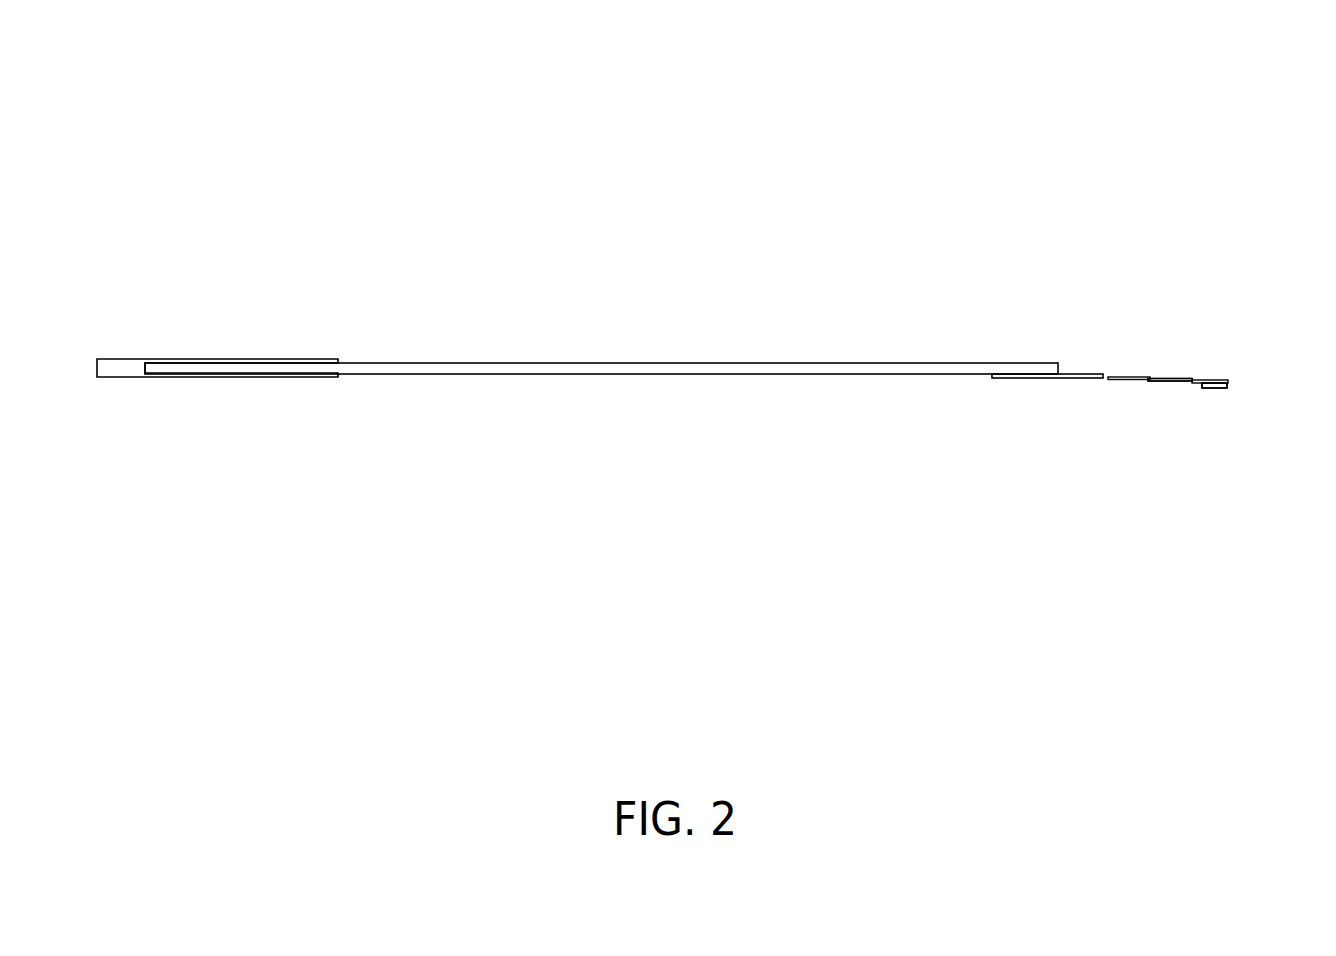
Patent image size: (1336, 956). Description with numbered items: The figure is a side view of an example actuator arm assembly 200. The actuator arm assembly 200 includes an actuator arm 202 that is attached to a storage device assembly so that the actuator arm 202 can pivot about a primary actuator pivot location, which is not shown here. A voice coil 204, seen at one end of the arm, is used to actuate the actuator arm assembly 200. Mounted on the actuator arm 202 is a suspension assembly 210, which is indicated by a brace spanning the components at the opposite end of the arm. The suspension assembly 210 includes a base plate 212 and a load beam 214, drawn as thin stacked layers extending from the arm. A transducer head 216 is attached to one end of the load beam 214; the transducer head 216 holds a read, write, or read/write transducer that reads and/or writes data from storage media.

The actuator arm assembly 200 is at (184, 168).
The actuator arm 202 is at (518, 374).
The voice coil 204 is at (122, 377).
The suspension assembly 210 is at (1213, 490).
The base plate 212 is at (1030, 378).
The load beam 214 is at (1190, 378).
The transducer head 216 is at (1231, 383).